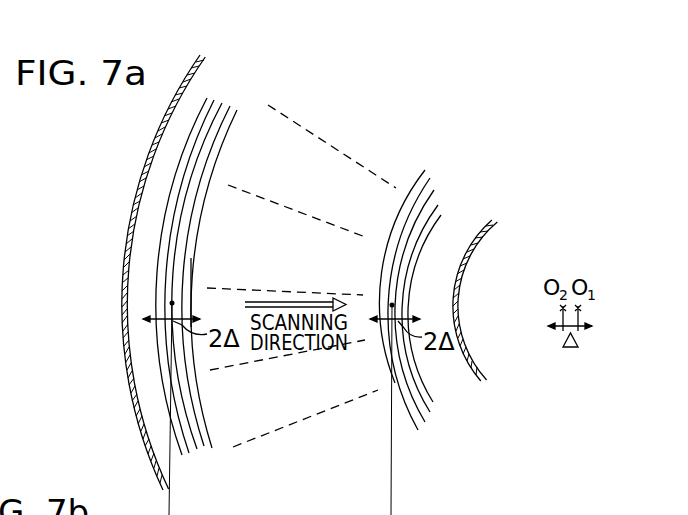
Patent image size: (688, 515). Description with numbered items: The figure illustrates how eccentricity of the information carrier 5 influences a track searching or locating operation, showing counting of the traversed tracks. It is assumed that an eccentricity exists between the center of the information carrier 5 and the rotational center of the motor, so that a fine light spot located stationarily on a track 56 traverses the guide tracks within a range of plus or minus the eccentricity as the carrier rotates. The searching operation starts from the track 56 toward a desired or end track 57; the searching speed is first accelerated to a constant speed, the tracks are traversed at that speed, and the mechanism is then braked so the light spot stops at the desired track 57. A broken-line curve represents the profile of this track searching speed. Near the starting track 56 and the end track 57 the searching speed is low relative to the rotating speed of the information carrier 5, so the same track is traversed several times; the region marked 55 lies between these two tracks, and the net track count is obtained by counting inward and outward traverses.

The information carrier 5 is at (165, 145).
The scanning light beam 55 is at (457, 190).
The track 56 is at (172, 303).
The desired track 57 is at (392, 305).